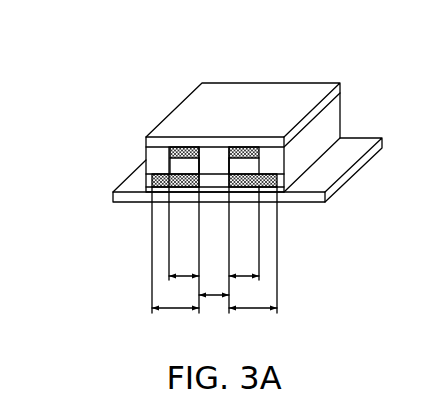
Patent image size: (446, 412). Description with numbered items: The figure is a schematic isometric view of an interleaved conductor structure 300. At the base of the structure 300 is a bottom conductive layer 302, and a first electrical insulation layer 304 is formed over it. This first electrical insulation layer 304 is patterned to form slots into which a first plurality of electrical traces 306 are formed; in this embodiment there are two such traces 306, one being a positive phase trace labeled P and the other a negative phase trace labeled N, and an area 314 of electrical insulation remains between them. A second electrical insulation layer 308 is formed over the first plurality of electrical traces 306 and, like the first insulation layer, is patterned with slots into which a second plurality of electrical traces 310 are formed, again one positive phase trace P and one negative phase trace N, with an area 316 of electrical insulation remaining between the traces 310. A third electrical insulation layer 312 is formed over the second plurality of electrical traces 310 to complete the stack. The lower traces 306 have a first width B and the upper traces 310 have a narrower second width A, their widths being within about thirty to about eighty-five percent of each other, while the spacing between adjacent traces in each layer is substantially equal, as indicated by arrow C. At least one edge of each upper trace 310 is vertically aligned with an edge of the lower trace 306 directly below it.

The interleaved conductor structure 300 is at (119, 138).
The bottom conductive layer 302 is at (120, 199).
The first electrical insulation layer 304 is at (334, 139).
The first plurality of electrical traces 306 is at (162, 188).
The second electrical insulation layer 308 is at (208, 167).
The second plurality of electrical traces 310 is at (333, 67).
The third electrical insulation layer 312 is at (261, 97).
The area of electrical insulation 314 is at (214, 178).
The area of electrical insulation 316 is at (217, 150).